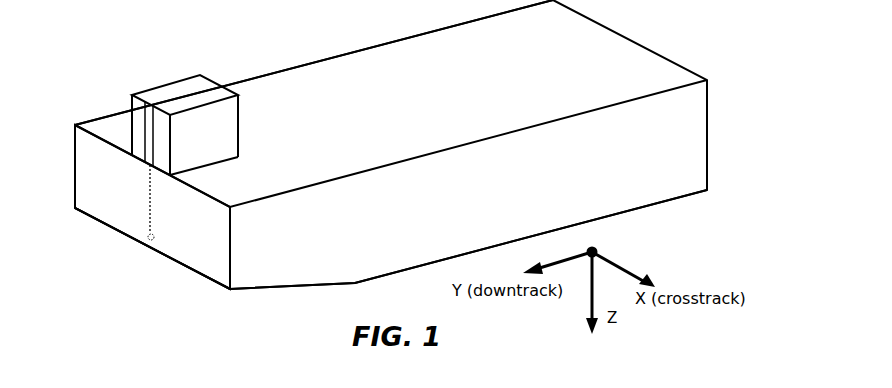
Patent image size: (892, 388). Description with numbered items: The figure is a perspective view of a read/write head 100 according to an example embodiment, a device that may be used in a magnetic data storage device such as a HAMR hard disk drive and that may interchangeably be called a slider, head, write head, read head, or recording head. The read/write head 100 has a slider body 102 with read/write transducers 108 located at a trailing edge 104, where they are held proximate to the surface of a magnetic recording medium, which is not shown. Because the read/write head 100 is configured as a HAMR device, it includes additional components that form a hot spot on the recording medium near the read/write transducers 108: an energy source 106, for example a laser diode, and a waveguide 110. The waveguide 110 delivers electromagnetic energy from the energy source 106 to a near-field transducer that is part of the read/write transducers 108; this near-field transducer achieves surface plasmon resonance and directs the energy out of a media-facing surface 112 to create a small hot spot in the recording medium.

The read/write head 100 is at (672, 37).
The slider body 102 is at (345, 62).
The trailing edge 104 is at (78, 190).
The energy source 106 is at (152, 91).
The read/write transducers 108 is at (147, 265).
The waveguide 110 is at (148, 200).
The media-facing surface 112 is at (219, 290).